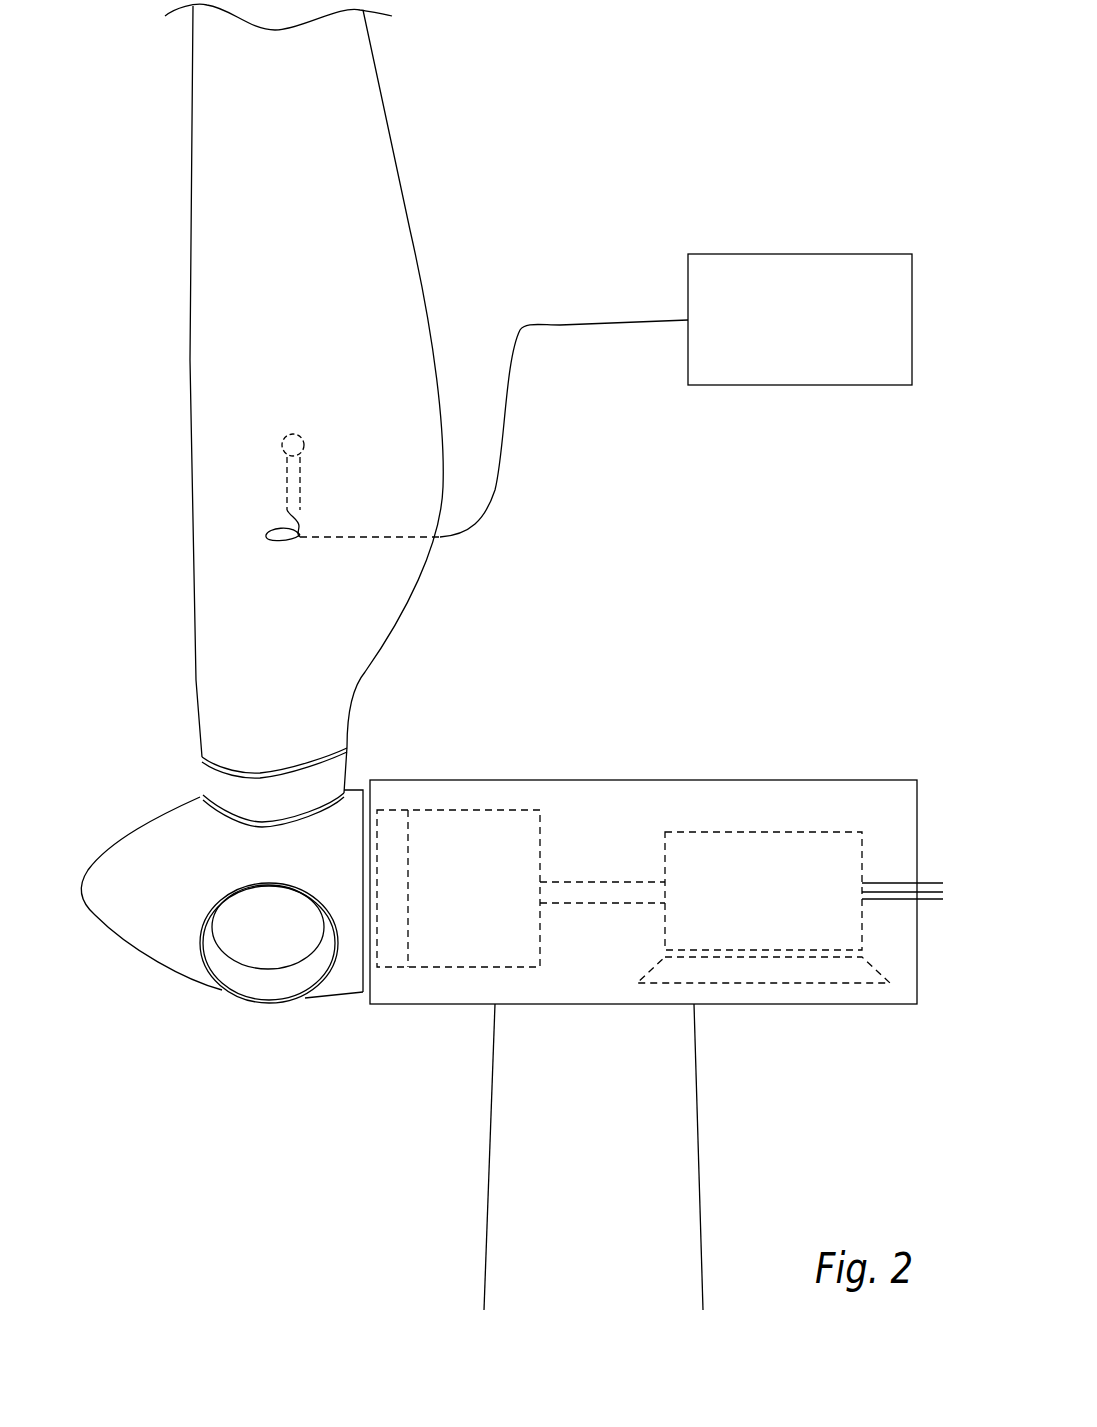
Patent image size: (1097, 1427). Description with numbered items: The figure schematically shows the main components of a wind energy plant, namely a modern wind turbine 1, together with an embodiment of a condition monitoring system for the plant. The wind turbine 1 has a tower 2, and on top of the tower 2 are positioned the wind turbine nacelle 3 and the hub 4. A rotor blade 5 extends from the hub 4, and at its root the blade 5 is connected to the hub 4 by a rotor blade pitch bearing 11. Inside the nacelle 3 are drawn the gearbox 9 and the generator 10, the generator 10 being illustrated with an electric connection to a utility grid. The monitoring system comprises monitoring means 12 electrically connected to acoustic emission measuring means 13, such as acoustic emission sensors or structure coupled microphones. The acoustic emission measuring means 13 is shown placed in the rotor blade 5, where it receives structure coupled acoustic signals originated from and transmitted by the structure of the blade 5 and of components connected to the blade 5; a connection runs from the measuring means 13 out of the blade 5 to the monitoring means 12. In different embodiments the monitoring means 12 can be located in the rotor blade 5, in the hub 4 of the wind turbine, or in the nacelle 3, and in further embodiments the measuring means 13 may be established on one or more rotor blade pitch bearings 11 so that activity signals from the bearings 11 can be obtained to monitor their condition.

The wind turbine 1 is at (322, 1141).
The tower 2 is at (675, 1133).
The nacelle 3 is at (572, 790).
The hub 4 is at (160, 940).
The rotor blade 5 is at (355, 608).
The gearbox 9 is at (483, 825).
The generator 10 is at (768, 843).
The rotor blade pitch bearing 11 is at (218, 790).
The monitoring means 12 is at (782, 265).
The acoustic emission measuring means 13 is at (297, 483).